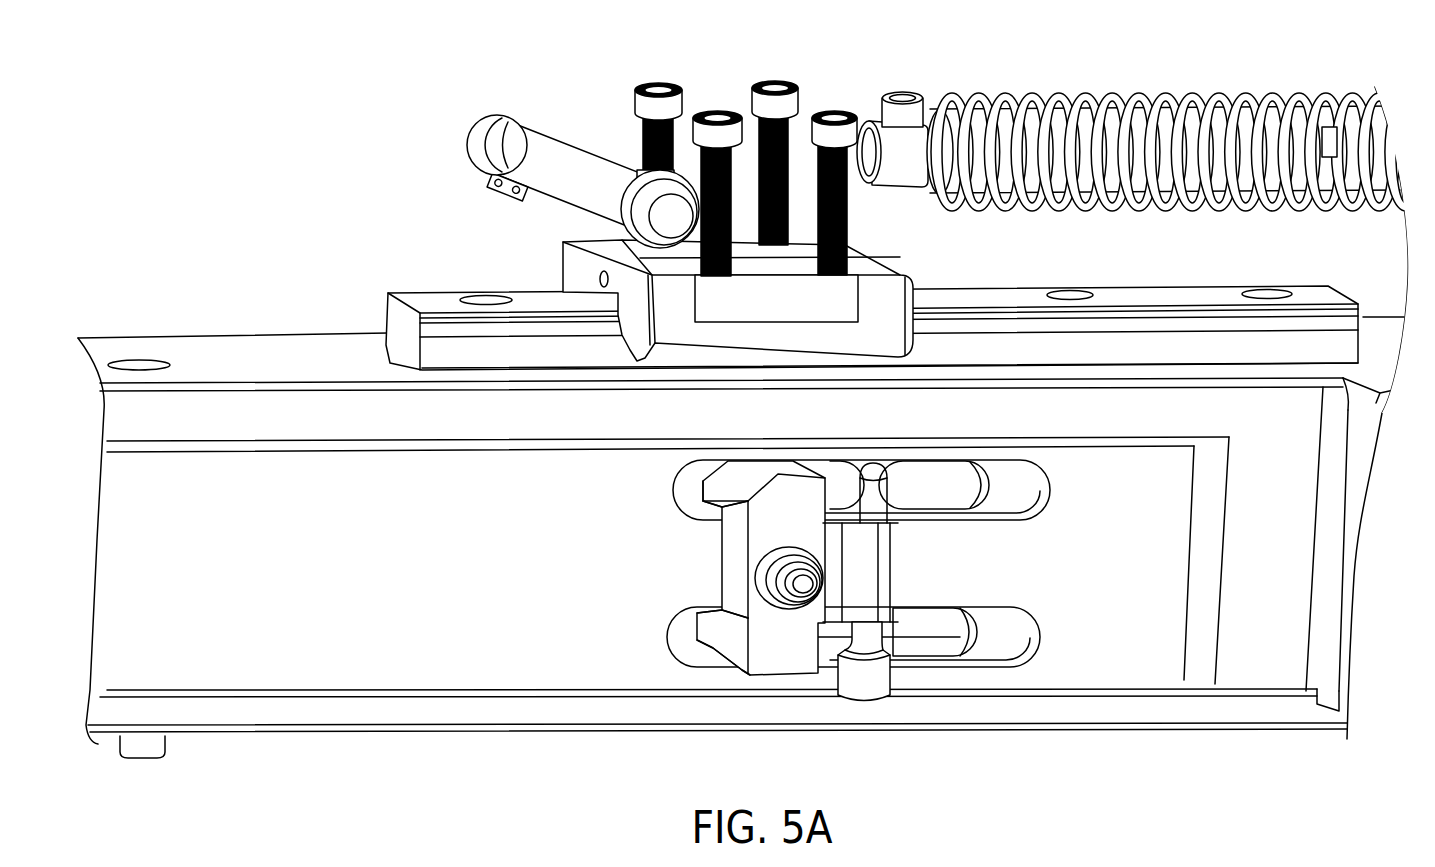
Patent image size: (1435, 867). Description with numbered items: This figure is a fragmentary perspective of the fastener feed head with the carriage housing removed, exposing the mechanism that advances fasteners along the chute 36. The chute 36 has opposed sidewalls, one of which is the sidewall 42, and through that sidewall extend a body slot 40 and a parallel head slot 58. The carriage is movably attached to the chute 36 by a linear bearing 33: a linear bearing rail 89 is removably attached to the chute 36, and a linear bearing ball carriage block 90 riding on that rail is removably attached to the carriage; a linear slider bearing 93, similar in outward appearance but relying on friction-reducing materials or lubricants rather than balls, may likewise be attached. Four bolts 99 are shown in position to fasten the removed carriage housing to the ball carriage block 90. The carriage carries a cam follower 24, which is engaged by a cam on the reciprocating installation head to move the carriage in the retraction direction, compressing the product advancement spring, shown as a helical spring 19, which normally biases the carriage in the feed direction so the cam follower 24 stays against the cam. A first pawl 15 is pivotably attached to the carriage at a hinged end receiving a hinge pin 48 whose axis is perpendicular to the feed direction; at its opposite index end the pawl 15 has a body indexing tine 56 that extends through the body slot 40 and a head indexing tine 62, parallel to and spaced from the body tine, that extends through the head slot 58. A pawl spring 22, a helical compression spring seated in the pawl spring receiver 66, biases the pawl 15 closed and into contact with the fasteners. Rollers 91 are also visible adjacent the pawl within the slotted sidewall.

The first pawl 15 is at (752, 665).
The helical spring 19 is at (1252, 95).
The pawl spring 22 is at (770, 583).
The cam follower 24 is at (557, 155).
The linear bearing 33 is at (630, 335).
The chute 36 is at (1140, 705).
The body slot 40 is at (1020, 660).
The sidewall 42 is at (430, 655).
The hinge pin 48 is at (872, 685).
The body indexing tine 56 is at (700, 622).
The head slot 58 is at (1050, 478).
The head indexing tine 62 is at (710, 488).
The pawl spring receiver 66 is at (782, 543).
The linear bearing rail 89 is at (1073, 338).
The linear bearing ball carriage block 90 is at (720, 318).
The rollers 91 is at (837, 468).
The linear slider bearing 93 is at (871, 325).
The bolts 99 is at (718, 110).